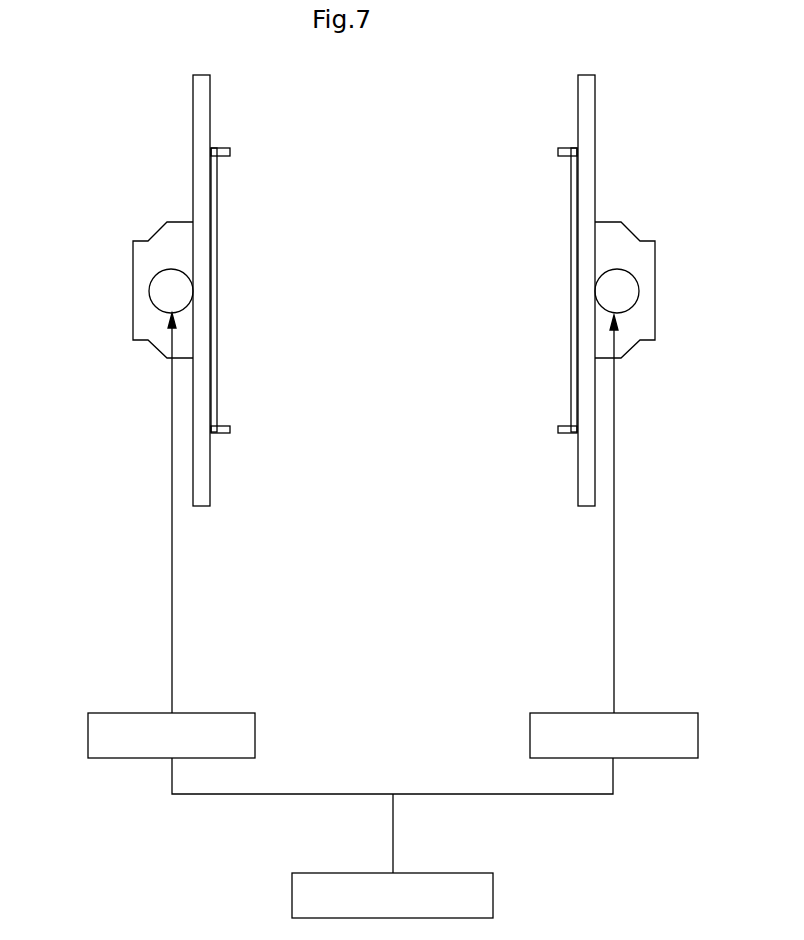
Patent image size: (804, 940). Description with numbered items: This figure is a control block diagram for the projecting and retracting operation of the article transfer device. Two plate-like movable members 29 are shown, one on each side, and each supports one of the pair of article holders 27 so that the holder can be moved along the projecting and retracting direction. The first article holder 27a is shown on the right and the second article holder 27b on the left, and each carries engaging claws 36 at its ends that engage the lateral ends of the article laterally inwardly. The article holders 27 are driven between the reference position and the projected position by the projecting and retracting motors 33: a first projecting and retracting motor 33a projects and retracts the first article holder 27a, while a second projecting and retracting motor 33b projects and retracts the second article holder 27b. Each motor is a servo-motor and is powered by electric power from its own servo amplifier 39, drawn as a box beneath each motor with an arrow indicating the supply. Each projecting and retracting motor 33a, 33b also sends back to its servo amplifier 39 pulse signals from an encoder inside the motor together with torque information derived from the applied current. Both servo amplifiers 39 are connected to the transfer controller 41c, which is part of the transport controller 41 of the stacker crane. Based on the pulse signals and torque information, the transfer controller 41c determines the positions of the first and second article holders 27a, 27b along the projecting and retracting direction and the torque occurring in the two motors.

The movable member 29 is at (211, 475).
The article holder 27 is at (394, 290).
The first article holder 27a is at (571, 322).
The second article holder 27b is at (217, 342).
The engaging claw 36 is at (231, 152).
The projecting and retracting motor 33 is at (393, 329).
The first projecting and retracting motor 33a is at (627, 297).
The second projecting and retracting motor 33b is at (160, 296).
The servo amplifier 39 is at (225, 713).
The transport controller 41 is at (470, 895).
The transfer controller 41c is at (493, 895).